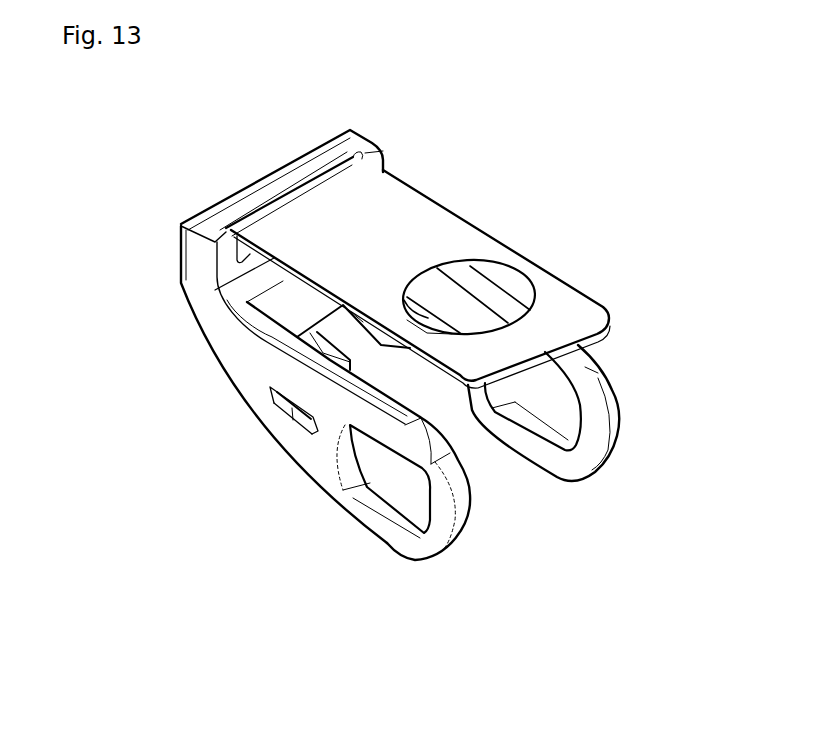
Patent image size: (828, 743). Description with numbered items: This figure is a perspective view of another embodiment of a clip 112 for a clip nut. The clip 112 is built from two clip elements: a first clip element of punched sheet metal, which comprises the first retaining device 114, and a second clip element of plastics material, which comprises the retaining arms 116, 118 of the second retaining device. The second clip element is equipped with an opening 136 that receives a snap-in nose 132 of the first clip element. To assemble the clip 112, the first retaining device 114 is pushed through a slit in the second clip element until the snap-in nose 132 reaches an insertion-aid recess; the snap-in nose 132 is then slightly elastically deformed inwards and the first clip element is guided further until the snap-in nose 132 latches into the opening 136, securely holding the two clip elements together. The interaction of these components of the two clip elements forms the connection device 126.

The clip 112 is at (146, 507).
The first retaining device 114 is at (452, 208).
The retaining arm 116 is at (390, 551).
The retaining arm 118 is at (615, 383).
The connection device 126 is at (218, 167).
The snap-in nose 132 is at (266, 402).
The opening 136 is at (302, 430).